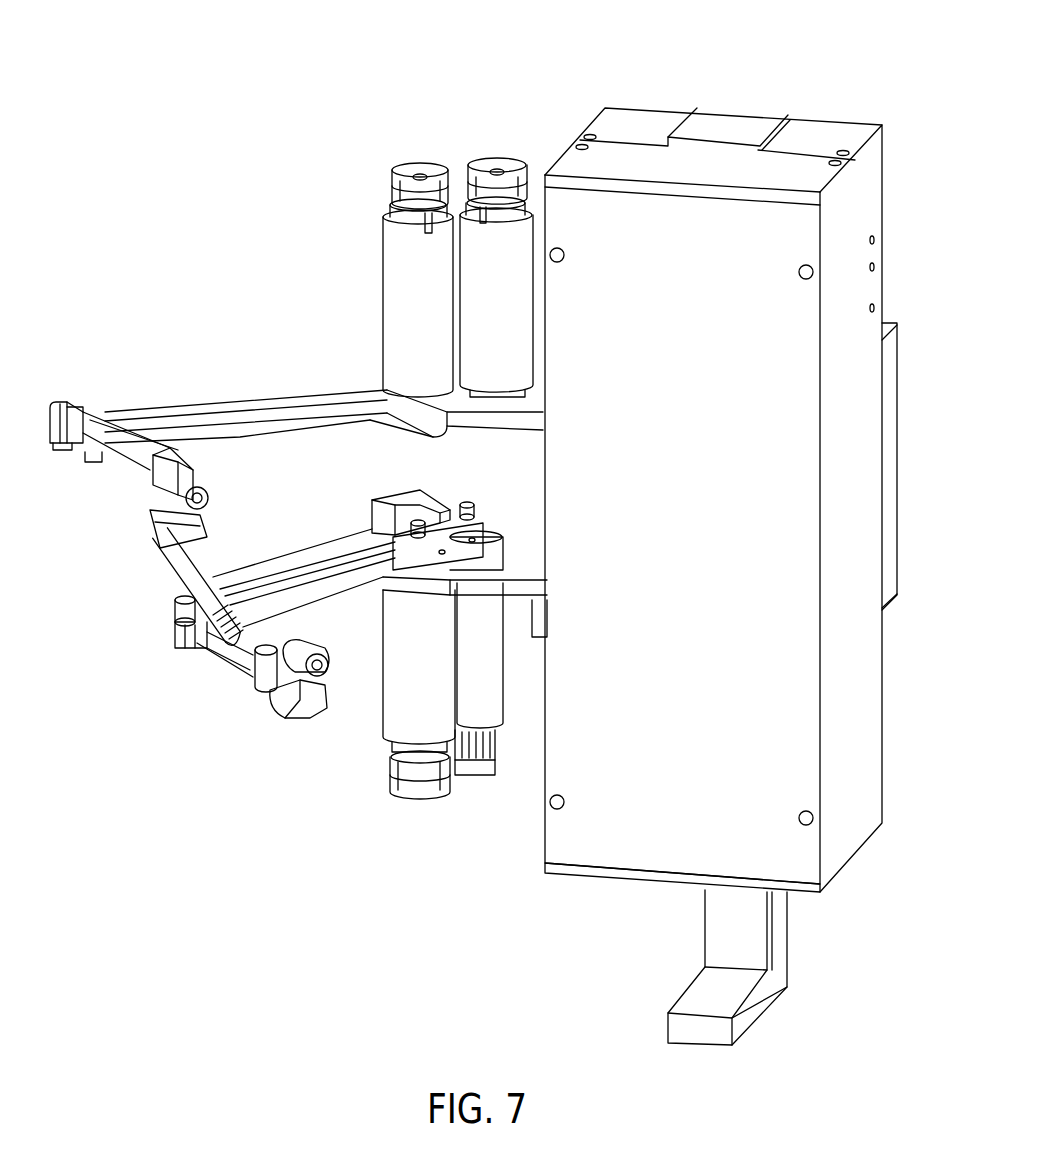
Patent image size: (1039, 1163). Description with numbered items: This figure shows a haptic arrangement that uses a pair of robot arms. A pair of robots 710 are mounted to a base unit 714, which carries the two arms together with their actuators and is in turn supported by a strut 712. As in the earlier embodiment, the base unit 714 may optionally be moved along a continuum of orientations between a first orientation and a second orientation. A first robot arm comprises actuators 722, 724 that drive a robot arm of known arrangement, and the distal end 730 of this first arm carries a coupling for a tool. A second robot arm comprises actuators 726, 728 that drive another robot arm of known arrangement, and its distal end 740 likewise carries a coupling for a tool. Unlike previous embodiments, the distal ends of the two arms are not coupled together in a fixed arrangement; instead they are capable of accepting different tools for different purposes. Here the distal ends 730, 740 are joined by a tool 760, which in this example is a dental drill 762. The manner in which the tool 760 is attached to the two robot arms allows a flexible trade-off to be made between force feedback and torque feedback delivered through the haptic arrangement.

The pair of robots 710 is at (828, 92).
The strut 712 is at (788, 947).
The base unit 714 is at (663, 539).
The actuator 722 is at (396, 322).
The actuator 724 is at (472, 322).
The actuator 726 is at (505, 690).
The actuator 728 is at (396, 672).
The distal end 730 is at (217, 483).
The distal end 740 is at (315, 712).
The tool 760 is at (177, 685).
The dental drill 762 is at (170, 572).